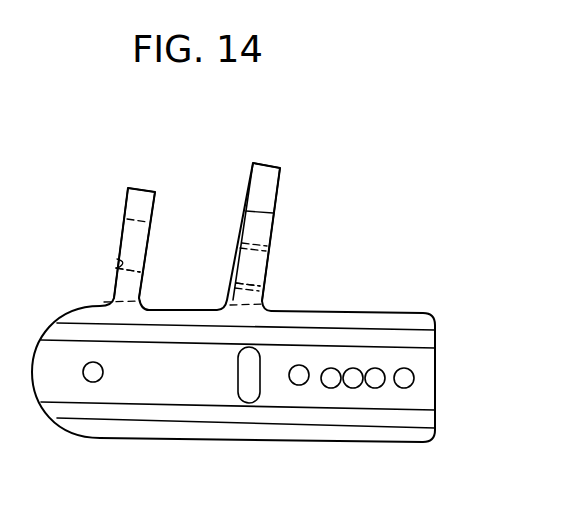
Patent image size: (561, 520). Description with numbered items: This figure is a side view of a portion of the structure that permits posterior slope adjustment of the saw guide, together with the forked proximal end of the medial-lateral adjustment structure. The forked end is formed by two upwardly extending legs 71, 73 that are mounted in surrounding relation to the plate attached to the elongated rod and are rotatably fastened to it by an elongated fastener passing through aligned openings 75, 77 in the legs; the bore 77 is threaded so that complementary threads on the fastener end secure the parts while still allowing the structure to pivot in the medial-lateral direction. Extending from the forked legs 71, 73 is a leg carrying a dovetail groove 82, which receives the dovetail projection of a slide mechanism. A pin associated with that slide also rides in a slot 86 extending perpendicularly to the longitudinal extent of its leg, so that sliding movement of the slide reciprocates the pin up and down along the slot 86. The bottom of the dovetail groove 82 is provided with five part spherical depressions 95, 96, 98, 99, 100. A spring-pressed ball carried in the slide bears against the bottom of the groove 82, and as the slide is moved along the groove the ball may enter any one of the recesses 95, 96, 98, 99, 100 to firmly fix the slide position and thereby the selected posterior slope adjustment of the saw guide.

The upwardly extending leg 71 is at (268, 198).
The upwardly extending leg 73 is at (132, 205).
The aligned opening 75 is at (266, 279).
The threaded bore 77 is at (114, 258).
The dovetail groove 82 is at (420, 365).
The slot 86 is at (243, 383).
The part spherical depression 95 is at (413, 379).
The part spherical depression 96 is at (375, 386).
The part spherical depression 98 is at (352, 386).
The part spherical depression 99 is at (330, 385).
The part spherical depression 100 is at (297, 383).